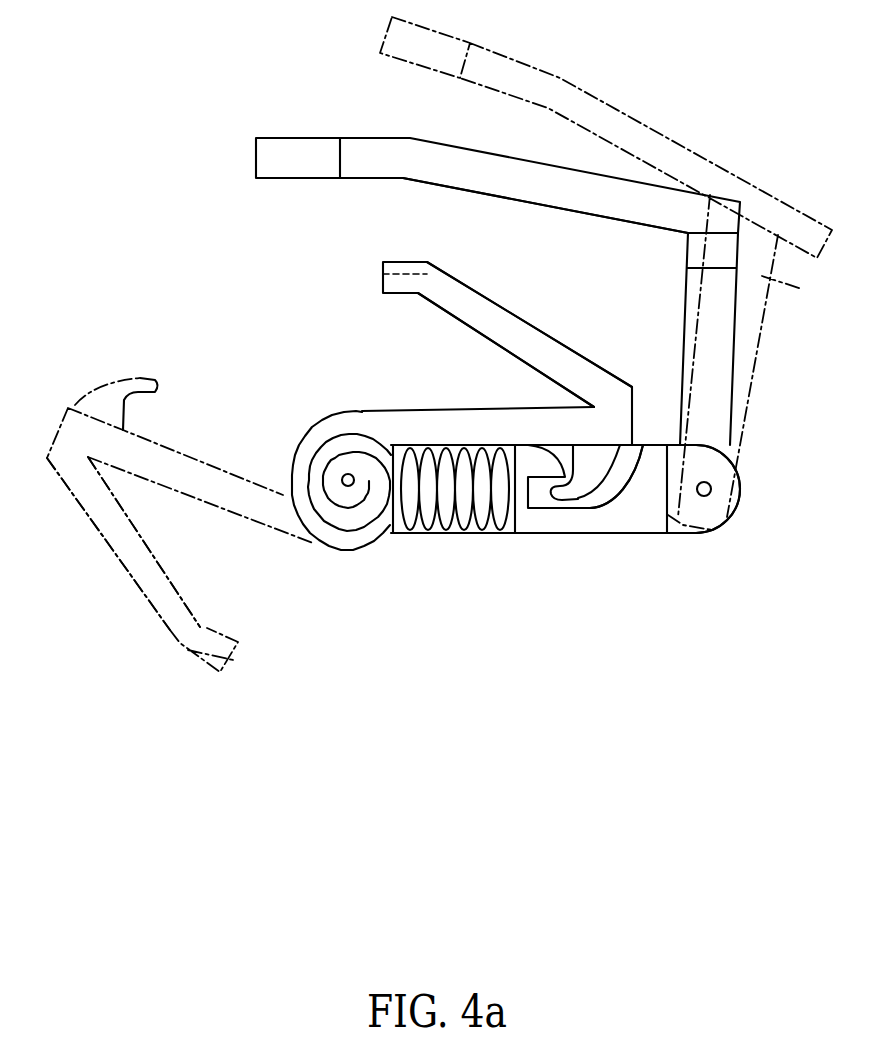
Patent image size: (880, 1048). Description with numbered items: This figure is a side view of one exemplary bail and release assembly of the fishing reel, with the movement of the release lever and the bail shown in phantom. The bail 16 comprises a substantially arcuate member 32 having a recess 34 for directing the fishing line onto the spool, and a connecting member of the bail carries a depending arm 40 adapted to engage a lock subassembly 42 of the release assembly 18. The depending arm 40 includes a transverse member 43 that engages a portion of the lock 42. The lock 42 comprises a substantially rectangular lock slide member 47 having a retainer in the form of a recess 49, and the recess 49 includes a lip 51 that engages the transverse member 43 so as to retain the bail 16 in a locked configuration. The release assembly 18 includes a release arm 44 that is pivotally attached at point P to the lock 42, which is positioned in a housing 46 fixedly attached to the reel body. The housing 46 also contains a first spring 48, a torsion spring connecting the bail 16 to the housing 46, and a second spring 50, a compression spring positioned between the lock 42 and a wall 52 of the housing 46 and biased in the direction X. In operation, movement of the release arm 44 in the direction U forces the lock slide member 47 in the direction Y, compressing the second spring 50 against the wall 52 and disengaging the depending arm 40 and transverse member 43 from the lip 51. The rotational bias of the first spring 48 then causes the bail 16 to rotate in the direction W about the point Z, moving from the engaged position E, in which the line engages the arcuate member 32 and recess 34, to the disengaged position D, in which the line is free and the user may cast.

The bail 16 is at (552, 335).
The release assembly 18 is at (256, 160).
The arcuate member 32 is at (487, 318).
The recess 34 is at (415, 275).
The depending arm 40 is at (595, 463).
The lock subassembly 42 is at (553, 593).
The transverse member 43 is at (568, 492).
The release arm 44 is at (377, 178).
The housing 46 is at (632, 514).
The lock slide member 47 is at (683, 535).
The first spring 48 is at (323, 533).
The recess 49 is at (617, 476).
The second spring 50 is at (425, 522).
The lip 51 is at (537, 465).
The wall of the housing 52 is at (432, 418).
The engaged position E is at (462, 282).
The point Z is at (346, 478).
The point P is at (709, 493).
The direction U is at (265, 128).
The direction W is at (82, 372).
The disengaged position D is at (150, 610).
The direction X is at (407, 574).
The direction Y is at (663, 574).